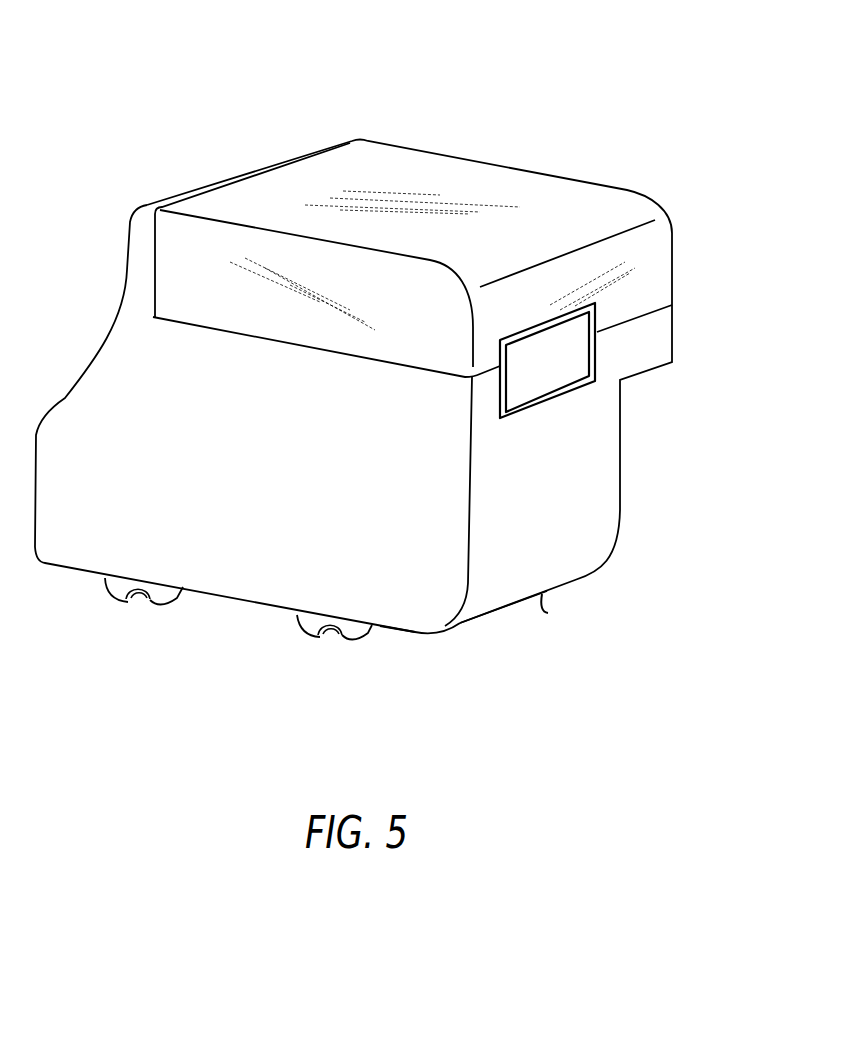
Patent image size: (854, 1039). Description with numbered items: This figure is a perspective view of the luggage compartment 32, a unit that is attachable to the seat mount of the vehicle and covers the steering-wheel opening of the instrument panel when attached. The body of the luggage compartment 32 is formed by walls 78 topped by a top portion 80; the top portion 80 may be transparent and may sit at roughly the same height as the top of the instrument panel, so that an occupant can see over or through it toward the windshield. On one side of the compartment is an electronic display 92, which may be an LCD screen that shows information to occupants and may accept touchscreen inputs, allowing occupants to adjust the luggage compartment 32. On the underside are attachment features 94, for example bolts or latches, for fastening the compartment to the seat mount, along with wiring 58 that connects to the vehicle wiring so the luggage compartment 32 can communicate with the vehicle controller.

The luggage compartment 32 is at (111, 73).
The top portion 80 is at (528, 173).
The electronic display 92 is at (598, 355).
The walls 78 is at (373, 630).
The attachment features 94 is at (303, 627).
The wiring 58 is at (547, 613).